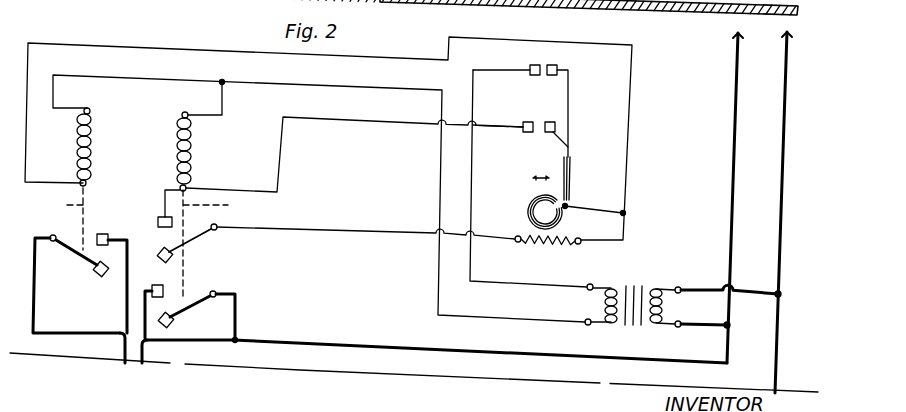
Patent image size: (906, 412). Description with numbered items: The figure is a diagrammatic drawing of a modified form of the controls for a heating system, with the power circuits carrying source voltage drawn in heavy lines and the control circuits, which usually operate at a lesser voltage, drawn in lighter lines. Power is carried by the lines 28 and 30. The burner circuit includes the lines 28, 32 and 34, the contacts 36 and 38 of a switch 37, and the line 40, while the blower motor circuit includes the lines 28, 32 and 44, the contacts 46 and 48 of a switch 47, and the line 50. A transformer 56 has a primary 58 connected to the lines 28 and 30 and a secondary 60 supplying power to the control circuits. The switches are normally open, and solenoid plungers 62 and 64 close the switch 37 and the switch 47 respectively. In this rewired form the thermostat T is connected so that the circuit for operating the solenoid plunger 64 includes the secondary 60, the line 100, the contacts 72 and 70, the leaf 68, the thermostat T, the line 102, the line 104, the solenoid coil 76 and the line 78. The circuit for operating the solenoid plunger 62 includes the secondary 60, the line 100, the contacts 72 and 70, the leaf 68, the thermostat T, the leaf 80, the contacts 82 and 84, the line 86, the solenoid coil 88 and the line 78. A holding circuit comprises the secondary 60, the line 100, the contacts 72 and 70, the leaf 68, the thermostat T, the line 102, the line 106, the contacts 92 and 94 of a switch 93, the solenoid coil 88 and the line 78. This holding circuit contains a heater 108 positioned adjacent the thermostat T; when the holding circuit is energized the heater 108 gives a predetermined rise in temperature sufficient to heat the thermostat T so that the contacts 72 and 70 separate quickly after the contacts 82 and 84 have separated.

The line 104 is at (219, 47).
The line 78 is at (357, 65).
The line 86 is at (367, 122).
The solenoid coil 76 is at (94, 150).
The solenoid coil 88 is at (195, 147).
The contact 94 is at (158, 219).
The solenoid plunger 64 is at (60, 219).
The solenoid plunger 62 is at (349, 245).
The contact 48 is at (103, 234).
The switch 47 is at (79, 256).
The line 44 is at (35, 298).
The contact 46 is at (100, 276).
The switch 93 is at (167, 235).
The contact 92 is at (160, 257).
The contact 38 is at (162, 285).
The switch 37 is at (175, 299).
The contact 36 is at (172, 323).
The line 34 is at (235, 318).
The line 50 is at (120, 370).
The line 40 is at (145, 365).
The line 32 is at (420, 325).
The secondary 60 is at (601, 335).
The transformer 56 is at (645, 279).
The primary 58 is at (662, 305).
The line 100 is at (538, 268).
The line 106 is at (490, 233).
The heater 108 is at (520, 243).
The line 102 is at (592, 212).
The thermostat T is at (579, 177).
The contact 72 is at (534, 64).
The contact 70 is at (553, 64).
The leaf 68 is at (575, 91).
The contact 84 is at (523, 120).
The leaf 80 is at (560, 134).
The contact 82 is at (530, 134).
The line 28 is at (733, 168).
The line 30 is at (787, 150).